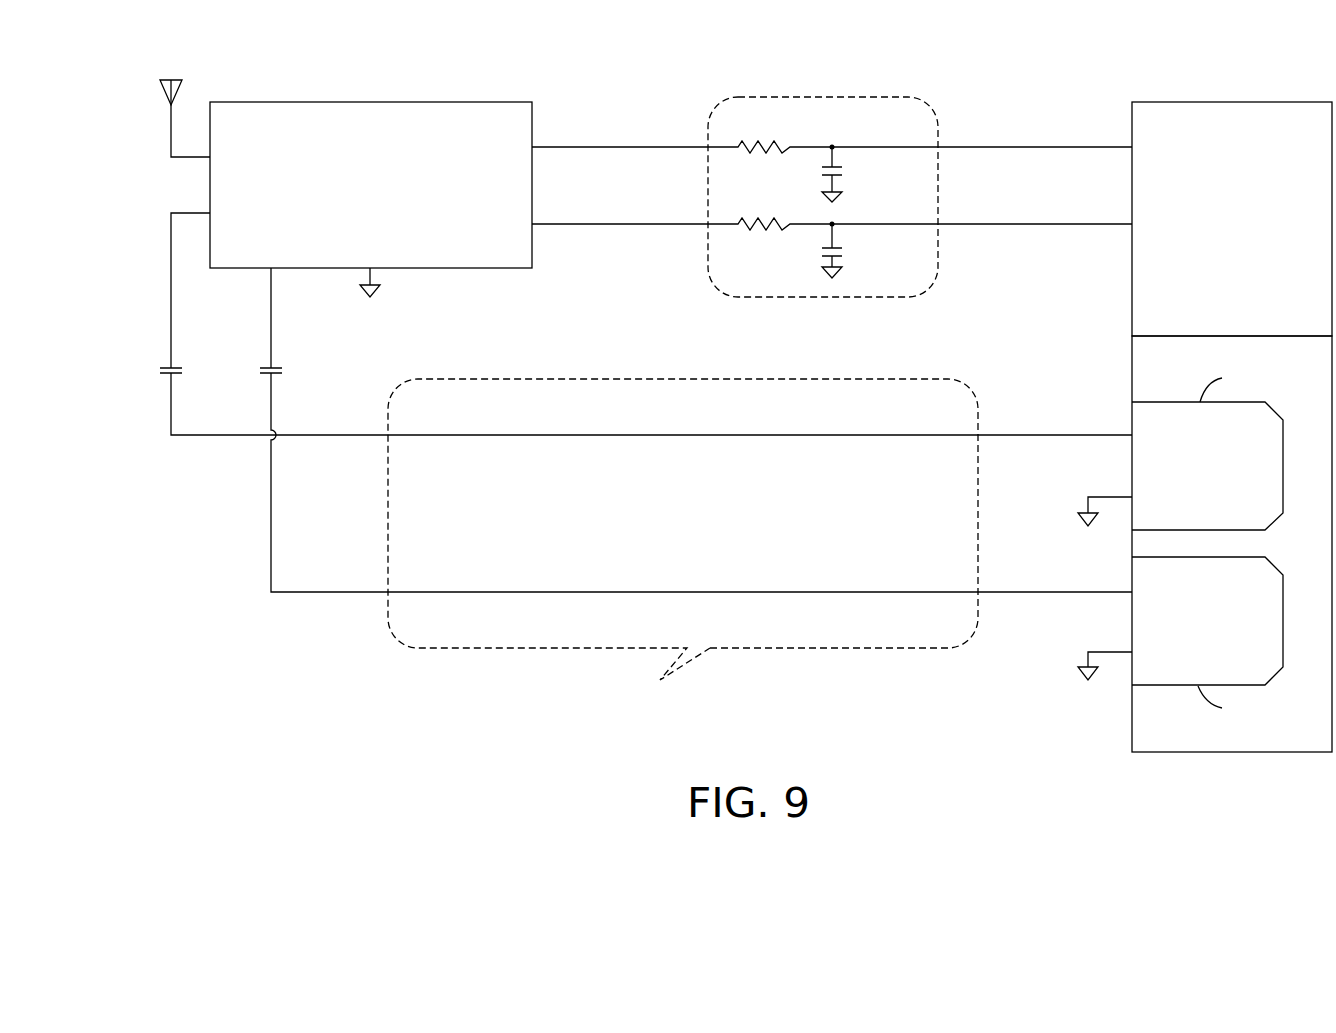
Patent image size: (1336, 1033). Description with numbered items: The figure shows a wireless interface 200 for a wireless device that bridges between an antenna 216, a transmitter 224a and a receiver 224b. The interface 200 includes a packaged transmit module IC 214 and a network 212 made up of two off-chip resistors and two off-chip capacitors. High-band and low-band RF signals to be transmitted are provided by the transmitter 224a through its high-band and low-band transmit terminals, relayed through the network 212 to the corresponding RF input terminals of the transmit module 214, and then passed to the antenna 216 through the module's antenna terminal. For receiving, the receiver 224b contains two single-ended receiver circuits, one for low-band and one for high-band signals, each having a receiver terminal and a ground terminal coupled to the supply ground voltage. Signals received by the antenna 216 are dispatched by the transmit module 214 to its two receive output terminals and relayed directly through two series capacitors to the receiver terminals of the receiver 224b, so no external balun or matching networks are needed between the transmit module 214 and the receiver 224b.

The wireless interface 200 is at (238, 635).
The network 212 is at (806, 97).
The TxM 214 is at (320, 101).
The antenna 216 is at (178, 76).
The transmitter 224a is at (1130, 306).
The receiver 224b is at (1130, 348).